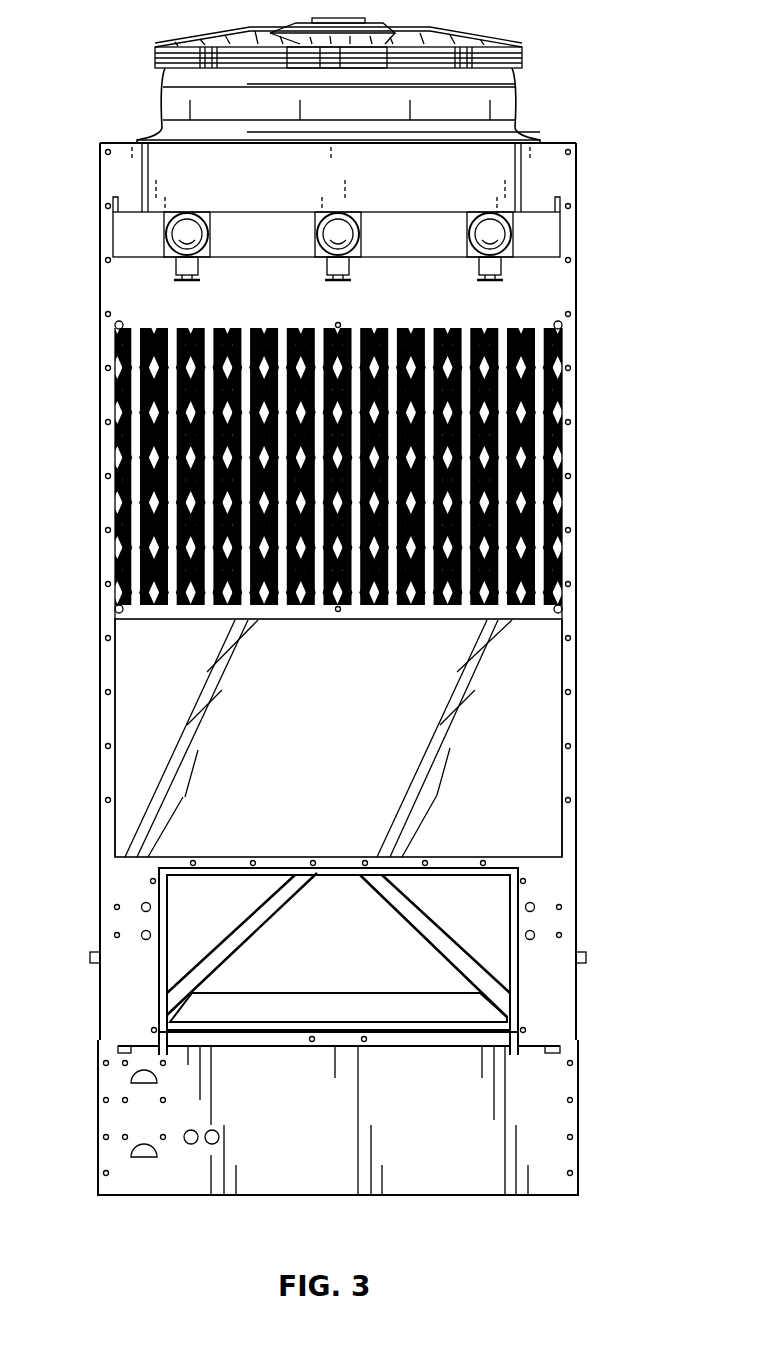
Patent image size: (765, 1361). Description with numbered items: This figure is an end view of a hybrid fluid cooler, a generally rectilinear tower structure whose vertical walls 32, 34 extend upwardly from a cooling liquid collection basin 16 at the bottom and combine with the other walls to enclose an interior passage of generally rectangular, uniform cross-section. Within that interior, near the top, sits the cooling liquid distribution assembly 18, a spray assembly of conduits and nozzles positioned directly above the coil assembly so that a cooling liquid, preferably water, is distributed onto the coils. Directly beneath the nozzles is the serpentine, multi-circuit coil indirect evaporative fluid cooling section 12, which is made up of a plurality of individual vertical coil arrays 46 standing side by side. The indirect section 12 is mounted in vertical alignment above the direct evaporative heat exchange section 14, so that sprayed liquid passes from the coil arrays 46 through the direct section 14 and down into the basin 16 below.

The indirect evaporative fluid cooling section 12 is at (305, 589).
The direct evaporative heat exchange section 14 is at (135, 672).
The cooling liquid collection basin 16 is at (414, 1123).
The cooling liquid distribution assembly 18 is at (187, 232).
The vertical front wall 32 is at (578, 283).
The vertical rear wall 34 is at (100, 295).
The individual vertical coil arrays 46 is at (135, 520).